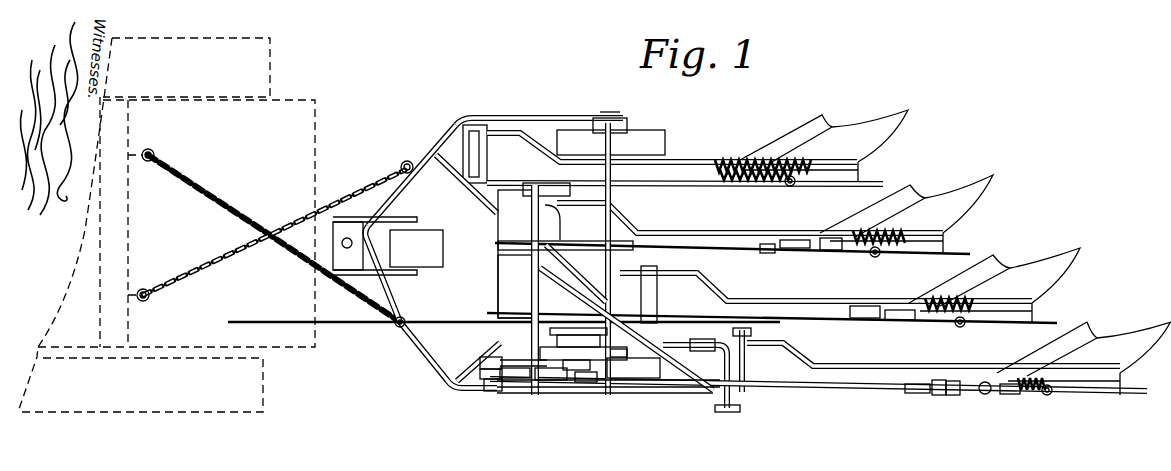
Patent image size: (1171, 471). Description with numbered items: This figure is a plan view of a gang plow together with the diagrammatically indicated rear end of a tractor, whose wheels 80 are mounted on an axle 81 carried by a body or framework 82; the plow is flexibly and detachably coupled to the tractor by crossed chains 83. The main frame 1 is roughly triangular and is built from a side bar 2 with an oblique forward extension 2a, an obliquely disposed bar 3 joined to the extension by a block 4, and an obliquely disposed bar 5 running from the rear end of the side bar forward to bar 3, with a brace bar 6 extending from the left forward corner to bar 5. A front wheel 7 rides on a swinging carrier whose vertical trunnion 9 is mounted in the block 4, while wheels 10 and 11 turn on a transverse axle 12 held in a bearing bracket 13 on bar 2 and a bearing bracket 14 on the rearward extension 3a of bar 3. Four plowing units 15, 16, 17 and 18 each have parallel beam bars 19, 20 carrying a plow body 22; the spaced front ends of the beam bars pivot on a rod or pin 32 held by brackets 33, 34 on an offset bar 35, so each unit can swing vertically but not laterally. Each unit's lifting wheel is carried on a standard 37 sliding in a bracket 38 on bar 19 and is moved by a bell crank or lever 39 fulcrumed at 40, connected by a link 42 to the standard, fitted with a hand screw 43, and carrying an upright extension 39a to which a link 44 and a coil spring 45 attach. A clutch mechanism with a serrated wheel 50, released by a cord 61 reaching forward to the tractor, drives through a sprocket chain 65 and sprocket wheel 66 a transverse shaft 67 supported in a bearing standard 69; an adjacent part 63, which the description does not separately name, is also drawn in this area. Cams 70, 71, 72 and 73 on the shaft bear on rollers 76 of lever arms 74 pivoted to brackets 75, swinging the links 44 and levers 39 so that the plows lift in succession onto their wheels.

The main frame 1 is at (425, 352).
The side bar 2 is at (575, 396).
The oblique forward extension 2a is at (402, 313).
The obliquely disposed bar 3 is at (400, 196).
The rearward extension 3a is at (515, 118).
The block 4 is at (336, 236).
The obliquely disposed bar 5 is at (648, 350).
The brace bar 6 is at (478, 352).
The front wheel 7 is at (440, 252).
The vertical trunnion 9 is at (353, 243).
The wheel 10 is at (666, 140).
The wheel 11 is at (645, 385).
The transverse axle 12 is at (622, 232).
The bearing bracket 13 is at (583, 383).
The bearing bracket 14 is at (625, 118).
The plowing unit 15 is at (1083, 358).
The plowing unit 16 is at (994, 285).
The plowing unit 17 is at (906, 214).
The plowing unit 18 is at (824, 146).
The beam bar 19 is at (870, 386).
The beam bar 20 is at (835, 366).
The plow body 22 is at (1124, 338).
The rod or pin 32 is at (746, 370).
The bracket 33 is at (735, 410).
The bracket 34 is at (708, 339).
The bar 35 is at (685, 343).
The standard 37 is at (940, 396).
The bracket 38 is at (915, 394).
The bell crank or lever 39 is at (1012, 395).
The upright extension 39a is at (990, 394).
The fulcrum 40 is at (630, 270).
The link 42 is at (955, 396).
The hand screw 43 is at (1053, 392).
The link 44 is at (612, 350).
The coil spring 45 is at (1035, 385).
The serrated wheel 50 is at (633, 368).
The cord 61 is at (480, 321).
The hub 63 is at (550, 340).
The sprocket chain 65 is at (526, 380).
The sprocket wheel 66 is at (545, 355).
The transverse shaft 67 is at (516, 286).
The bearing standard 69 is at (516, 254).
The cam 70 is at (558, 188).
The cam 71 is at (562, 243).
The cam 72 is at (590, 296).
The cam 73 is at (549, 382).
The lever arm 74 is at (490, 381).
The bracket 75 is at (486, 370).
The roller 76 is at (500, 393).
The tractor wheel 80 is at (275, 87).
The axle 81 is at (115, 334).
The body or framework 82 is at (298, 345).
The crossed chain 83 is at (340, 185).